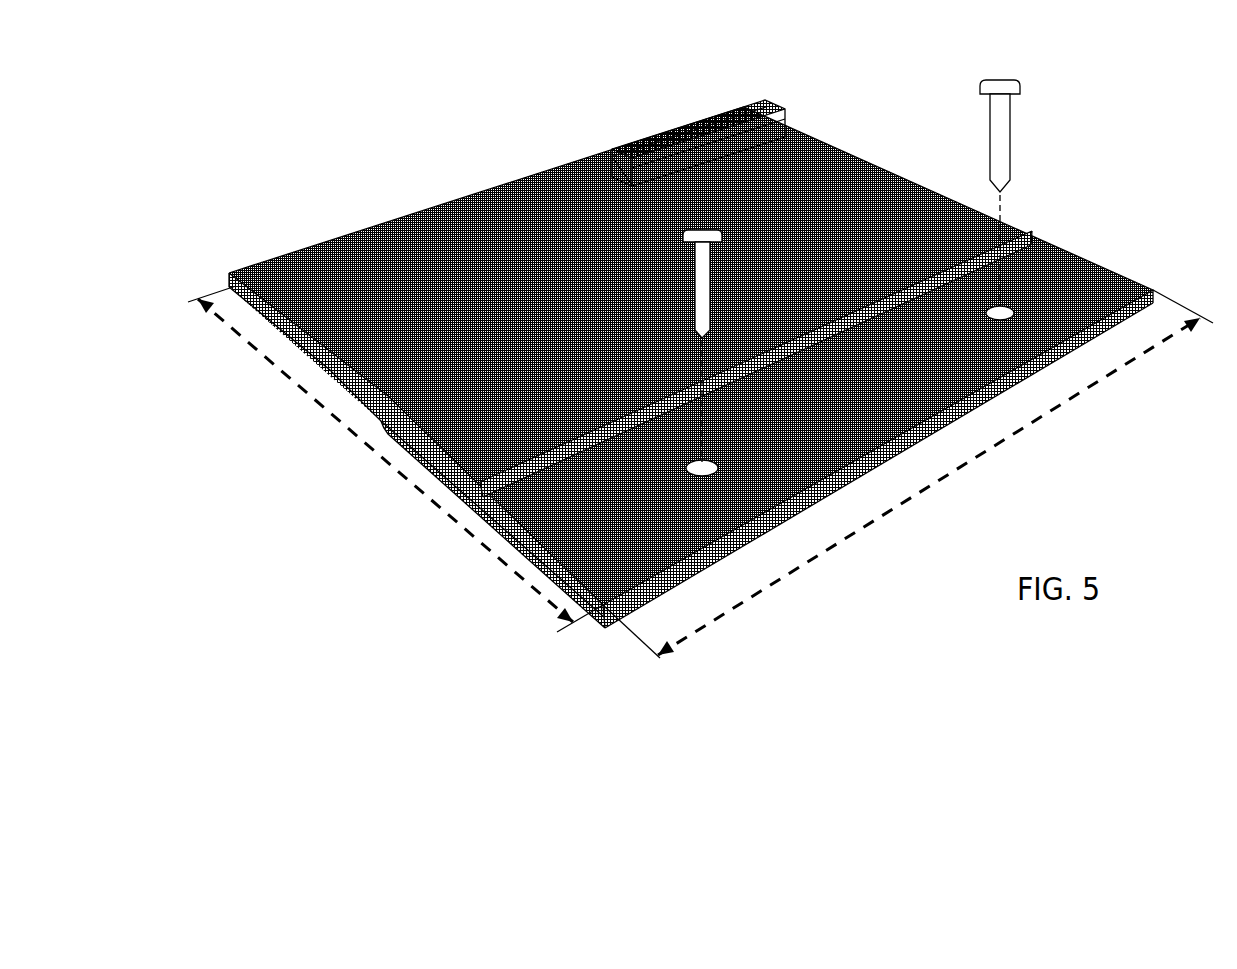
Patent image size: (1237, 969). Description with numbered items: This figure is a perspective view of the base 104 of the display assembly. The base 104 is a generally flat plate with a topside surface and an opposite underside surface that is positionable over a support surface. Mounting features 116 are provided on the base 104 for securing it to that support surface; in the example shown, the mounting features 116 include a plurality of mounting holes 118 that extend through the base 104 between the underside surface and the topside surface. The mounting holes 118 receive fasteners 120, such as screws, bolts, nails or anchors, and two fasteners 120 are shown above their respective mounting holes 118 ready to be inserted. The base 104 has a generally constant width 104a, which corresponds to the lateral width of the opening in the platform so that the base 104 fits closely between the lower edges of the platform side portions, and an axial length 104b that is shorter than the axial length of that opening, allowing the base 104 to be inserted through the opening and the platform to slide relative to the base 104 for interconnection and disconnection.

The base 104 is at (305, 184).
The width of the base 104a is at (1100, 384).
The axial length of the base 104b is at (363, 440).
The mounting features 116 is at (1026, 273).
The mounting holes 118 is at (712, 460).
The fasteners 120 is at (711, 273).